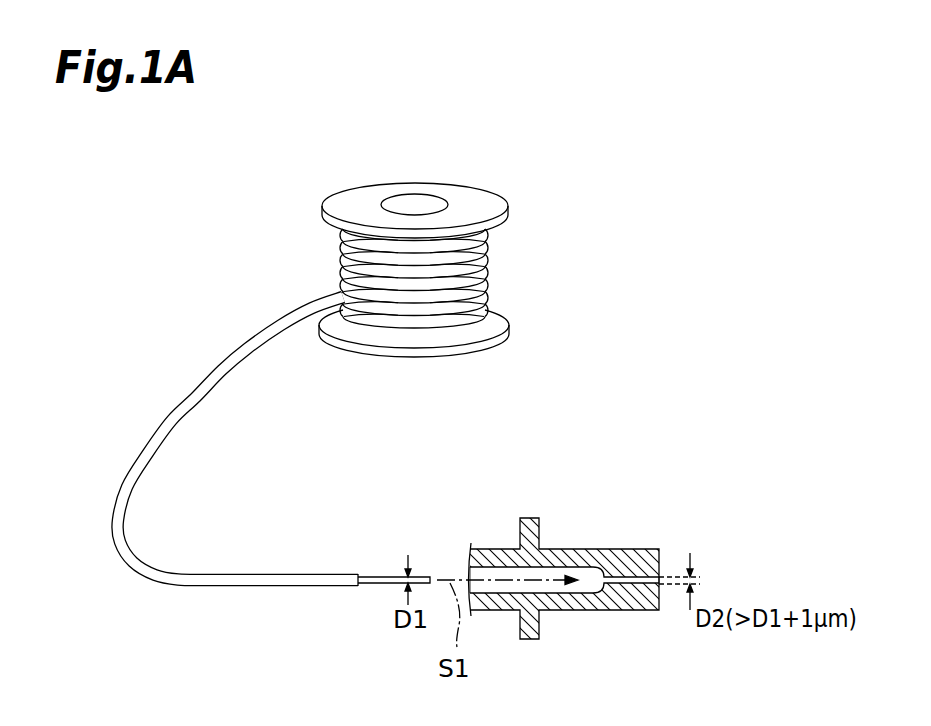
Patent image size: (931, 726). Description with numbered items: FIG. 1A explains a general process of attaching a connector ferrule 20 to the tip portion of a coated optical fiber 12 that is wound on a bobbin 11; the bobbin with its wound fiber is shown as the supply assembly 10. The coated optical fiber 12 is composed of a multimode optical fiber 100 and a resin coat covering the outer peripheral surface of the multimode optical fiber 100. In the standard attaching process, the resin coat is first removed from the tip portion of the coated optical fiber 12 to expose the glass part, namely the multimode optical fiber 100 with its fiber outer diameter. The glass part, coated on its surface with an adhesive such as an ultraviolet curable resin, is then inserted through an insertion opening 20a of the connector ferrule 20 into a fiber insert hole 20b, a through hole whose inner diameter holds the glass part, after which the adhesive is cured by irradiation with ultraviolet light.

The optical fiber reel (bobbin) 10 is at (386, 248).
The bobbin 11 is at (463, 193).
The coated optical fiber 12 is at (222, 372).
The multimode optical fiber 100 is at (385, 584).
The connector ferrule 20 is at (616, 560).
The insertion opening 20a is at (469, 575).
The fiber insert hole 20b is at (660, 577).